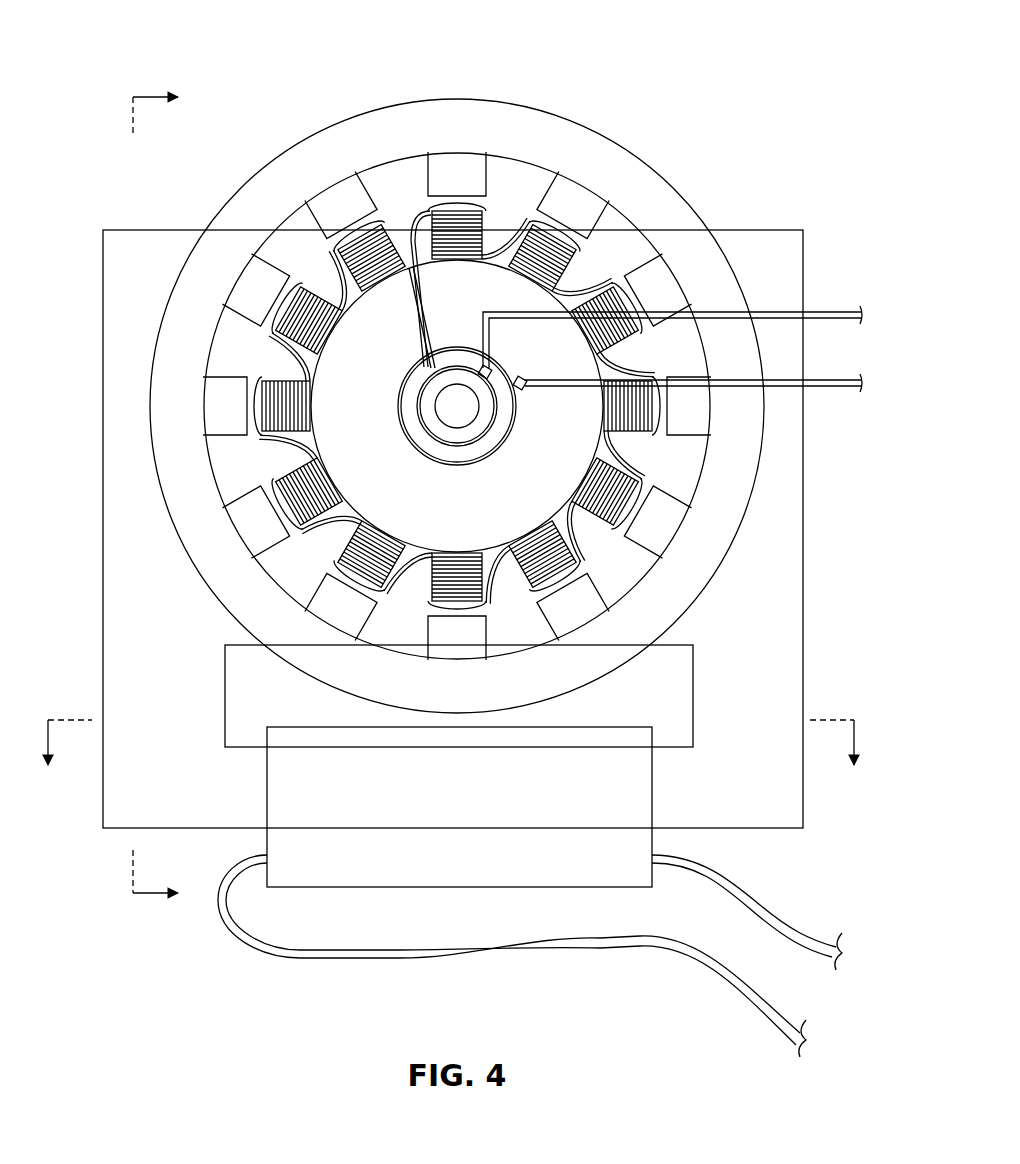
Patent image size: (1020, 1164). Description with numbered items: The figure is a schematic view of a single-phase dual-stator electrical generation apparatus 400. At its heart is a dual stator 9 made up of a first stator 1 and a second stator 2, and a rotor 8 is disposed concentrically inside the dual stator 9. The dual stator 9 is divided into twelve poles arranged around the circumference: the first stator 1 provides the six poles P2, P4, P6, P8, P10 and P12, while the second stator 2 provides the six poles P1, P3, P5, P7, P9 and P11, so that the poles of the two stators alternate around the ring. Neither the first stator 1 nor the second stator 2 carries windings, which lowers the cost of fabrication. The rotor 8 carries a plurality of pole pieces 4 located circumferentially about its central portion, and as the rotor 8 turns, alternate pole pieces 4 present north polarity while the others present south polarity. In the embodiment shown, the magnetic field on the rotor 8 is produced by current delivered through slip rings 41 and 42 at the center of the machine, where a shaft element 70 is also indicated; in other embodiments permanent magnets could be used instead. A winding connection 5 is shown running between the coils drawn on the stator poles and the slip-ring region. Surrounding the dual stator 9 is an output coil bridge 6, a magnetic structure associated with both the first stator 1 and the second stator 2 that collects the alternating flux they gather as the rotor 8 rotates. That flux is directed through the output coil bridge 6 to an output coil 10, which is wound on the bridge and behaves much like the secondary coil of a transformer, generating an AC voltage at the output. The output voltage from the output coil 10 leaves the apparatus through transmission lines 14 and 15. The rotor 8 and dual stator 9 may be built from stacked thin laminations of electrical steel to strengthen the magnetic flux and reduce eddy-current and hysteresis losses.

The dual-stator electrical generation apparatus 400 is at (705, 33).
The dual stator 9 is at (347, 90).
The first stator 1 is at (376, 187).
The winding wire 5 is at (318, 358).
The second stator 2 is at (678, 178).
The pole piece 4 is at (578, 245).
The slip ring 41 is at (430, 382).
The slip ring 42 is at (430, 425).
The shaft 70 is at (445, 417).
The rotor 8 is at (450, 518).
The output coil 10 is at (470, 816).
The output coil bridge 6 is at (808, 567).
The transmission line 14 is at (782, 897).
The transmission line 15 is at (733, 976).
The pole P1 is at (479, 205).
The pole P2 is at (635, 244).
The pole P3 is at (631, 325).
The pole P4 is at (657, 428).
The pole P5 is at (620, 508).
The pole P6 is at (538, 580).
The pole P7 is at (435, 606).
The pole P8 is at (354, 569).
The pole P9 is at (284, 487).
The pole P10 is at (256, 384).
The pole P11 is at (295, 303).
The pole P12 is at (358, 178).